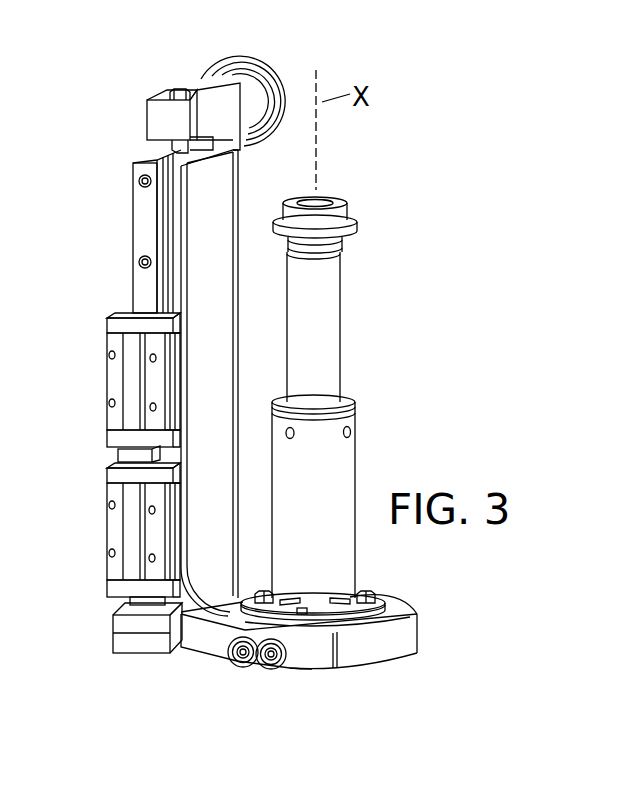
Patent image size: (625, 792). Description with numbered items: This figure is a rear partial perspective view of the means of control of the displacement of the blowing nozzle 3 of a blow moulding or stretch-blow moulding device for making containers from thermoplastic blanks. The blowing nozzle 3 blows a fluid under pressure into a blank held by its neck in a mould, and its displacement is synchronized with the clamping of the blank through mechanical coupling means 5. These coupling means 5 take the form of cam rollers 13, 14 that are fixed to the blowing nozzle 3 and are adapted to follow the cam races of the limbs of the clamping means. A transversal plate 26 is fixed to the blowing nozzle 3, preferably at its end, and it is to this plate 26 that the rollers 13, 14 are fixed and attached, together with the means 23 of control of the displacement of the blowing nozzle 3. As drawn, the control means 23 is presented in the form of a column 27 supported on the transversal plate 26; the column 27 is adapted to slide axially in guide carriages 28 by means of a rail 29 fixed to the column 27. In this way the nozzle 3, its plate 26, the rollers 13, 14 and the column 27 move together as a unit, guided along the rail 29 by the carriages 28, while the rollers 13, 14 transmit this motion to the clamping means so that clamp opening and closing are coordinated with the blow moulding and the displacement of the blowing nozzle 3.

The blowing nozzle 3 is at (323, 350).
The mechanical coupling means 5 is at (298, 676).
The cam roller 13 is at (270, 670).
The cam roller 14 is at (240, 663).
The means of control of the displacement of the nozzle 23 is at (124, 288).
The transversal plate 26 is at (380, 645).
The column 27 is at (220, 202).
The guide carriages 28 is at (110, 382).
The rail 29 is at (148, 223).